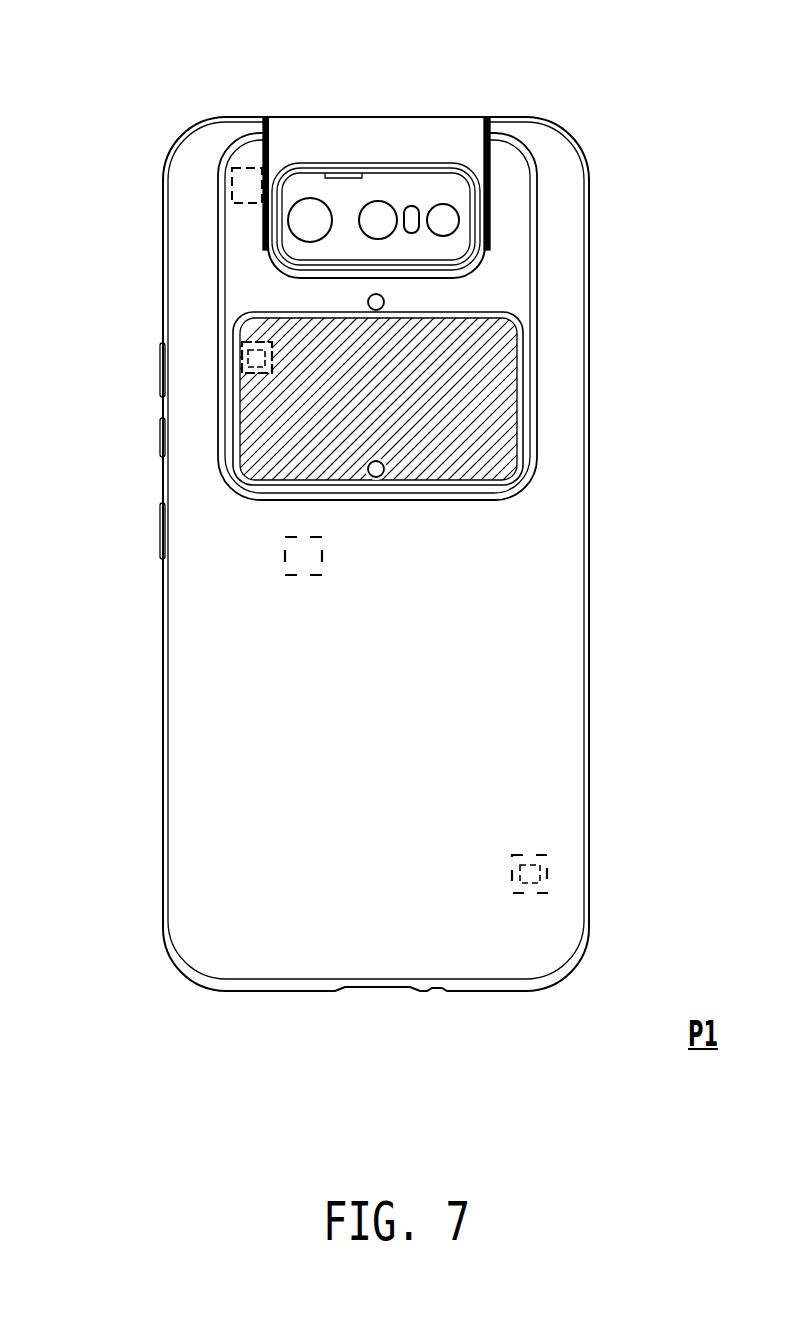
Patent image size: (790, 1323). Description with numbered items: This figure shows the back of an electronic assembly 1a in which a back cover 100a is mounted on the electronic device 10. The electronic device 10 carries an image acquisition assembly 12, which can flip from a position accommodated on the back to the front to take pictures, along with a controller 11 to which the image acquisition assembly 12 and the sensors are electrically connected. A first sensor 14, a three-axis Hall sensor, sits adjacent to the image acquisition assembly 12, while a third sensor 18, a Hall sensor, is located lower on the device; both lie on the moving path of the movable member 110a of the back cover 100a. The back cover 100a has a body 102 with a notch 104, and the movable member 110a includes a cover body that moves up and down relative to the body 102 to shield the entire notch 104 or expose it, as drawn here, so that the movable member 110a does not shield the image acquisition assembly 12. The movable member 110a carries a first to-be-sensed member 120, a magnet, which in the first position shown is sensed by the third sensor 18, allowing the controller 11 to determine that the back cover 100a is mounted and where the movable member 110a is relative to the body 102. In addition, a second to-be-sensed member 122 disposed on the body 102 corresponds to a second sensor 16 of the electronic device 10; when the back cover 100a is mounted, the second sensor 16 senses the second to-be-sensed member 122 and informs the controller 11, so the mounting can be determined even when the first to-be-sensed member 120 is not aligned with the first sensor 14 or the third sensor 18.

The electronic assembly 1a is at (150, 72).
The electronic device 10 is at (376, 216).
The image acquisition assembly 12 is at (383, 187).
The first sensor 14 is at (232, 187).
The second sensor 16 is at (533, 855).
The third sensor 18 is at (242, 346).
The controller 11 is at (285, 548).
The back cover 100a is at (585, 548).
The body 102 is at (557, 692).
The notch 104 is at (487, 137).
The movable member 110a is at (517, 378).
The first to-be-sensed member 120 is at (248, 365).
The second to-be-sensed member 122 is at (547, 877).